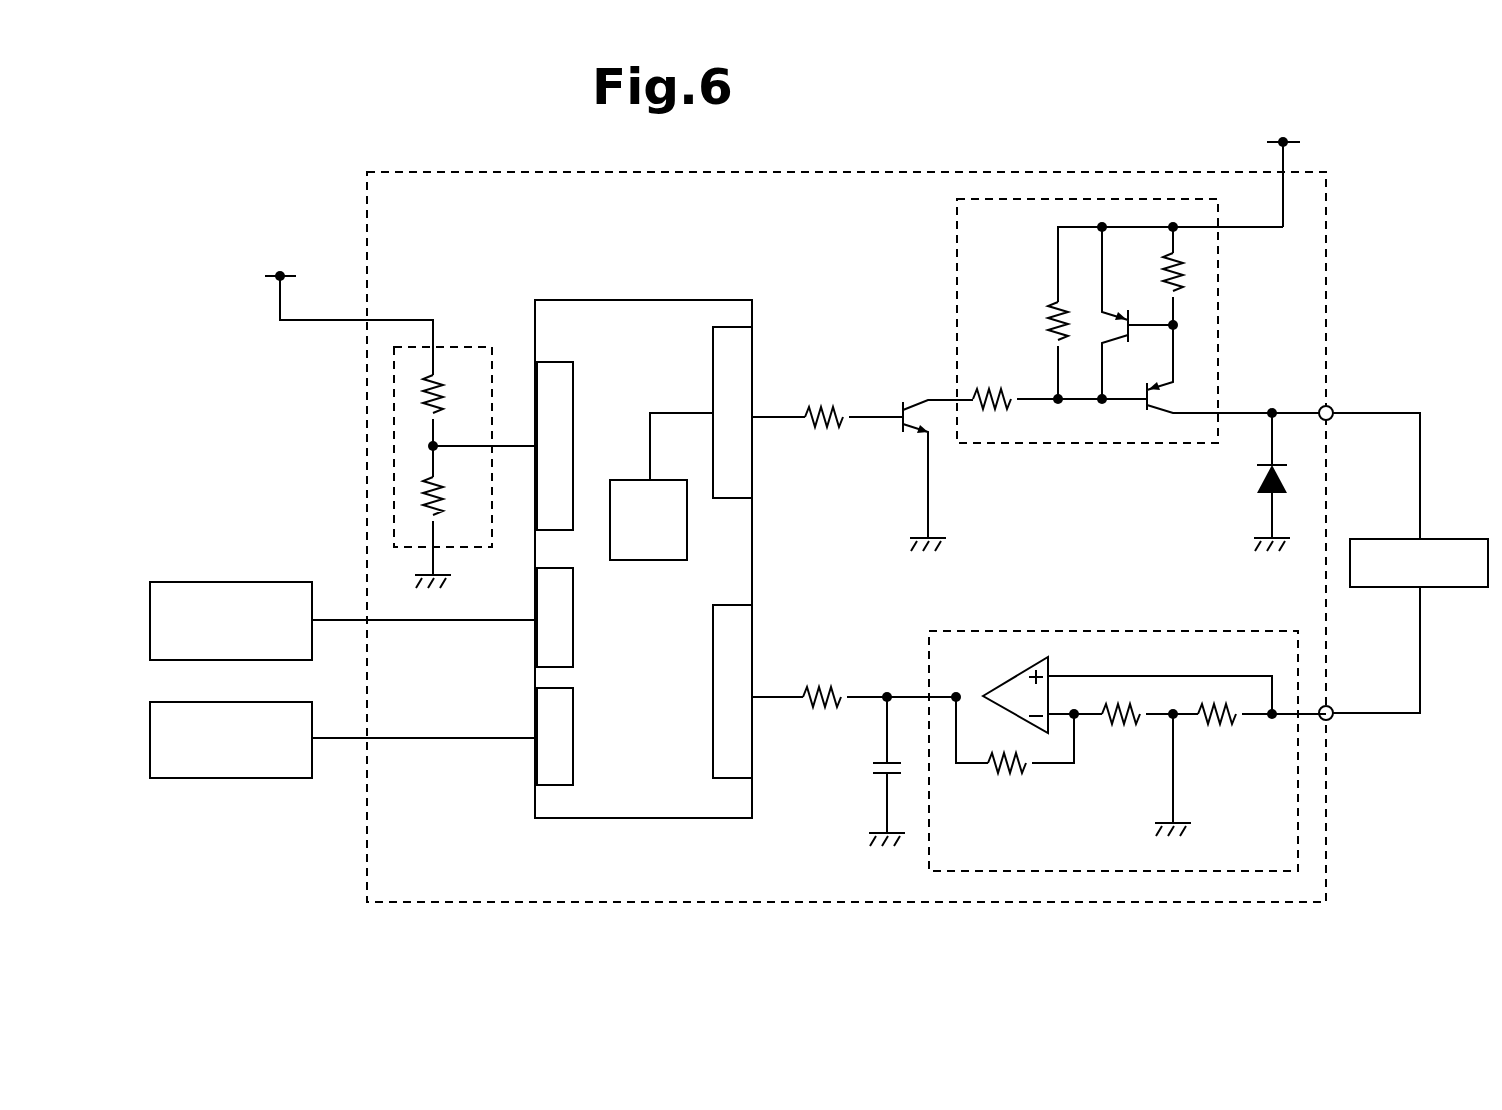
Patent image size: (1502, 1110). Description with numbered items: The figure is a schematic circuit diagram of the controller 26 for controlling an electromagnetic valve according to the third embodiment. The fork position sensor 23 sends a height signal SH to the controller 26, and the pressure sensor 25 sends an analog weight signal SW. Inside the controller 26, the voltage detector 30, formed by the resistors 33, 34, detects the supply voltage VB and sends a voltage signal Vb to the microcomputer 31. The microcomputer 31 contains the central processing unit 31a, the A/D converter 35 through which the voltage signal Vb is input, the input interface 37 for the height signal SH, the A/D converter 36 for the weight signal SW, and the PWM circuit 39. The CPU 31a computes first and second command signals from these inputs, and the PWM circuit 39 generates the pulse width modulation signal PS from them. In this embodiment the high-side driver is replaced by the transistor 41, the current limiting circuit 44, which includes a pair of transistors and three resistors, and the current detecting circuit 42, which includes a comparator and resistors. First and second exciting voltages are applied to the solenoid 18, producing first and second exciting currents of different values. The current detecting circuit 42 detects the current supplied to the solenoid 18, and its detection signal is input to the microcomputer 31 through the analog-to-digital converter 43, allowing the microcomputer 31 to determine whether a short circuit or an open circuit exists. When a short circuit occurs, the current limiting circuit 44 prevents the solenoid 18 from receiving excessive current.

The controller 26 is at (360, 198).
The voltage detector 30 is at (465, 344).
The resistor 33 is at (436, 392).
The resistor 34 is at (436, 488).
The microcomputer 31 is at (736, 292).
The A/D converter 35 is at (576, 362).
The input interface 37 is at (575, 632).
The A/D converter 36 is at (575, 738).
The analog-to-digital converter 43 is at (713, 753).
The PWM circuit 39 is at (712, 338).
The central processing unit 31a is at (648, 520).
The fork position sensor 23 is at (195, 582).
The pressure sensor 25 is at (195, 702).
The transistor 41 is at (899, 397).
The current limiting circuit 44 is at (1220, 276).
The solenoid 18 is at (1468, 538).
The current detecting circuit 42 is at (1086, 628).